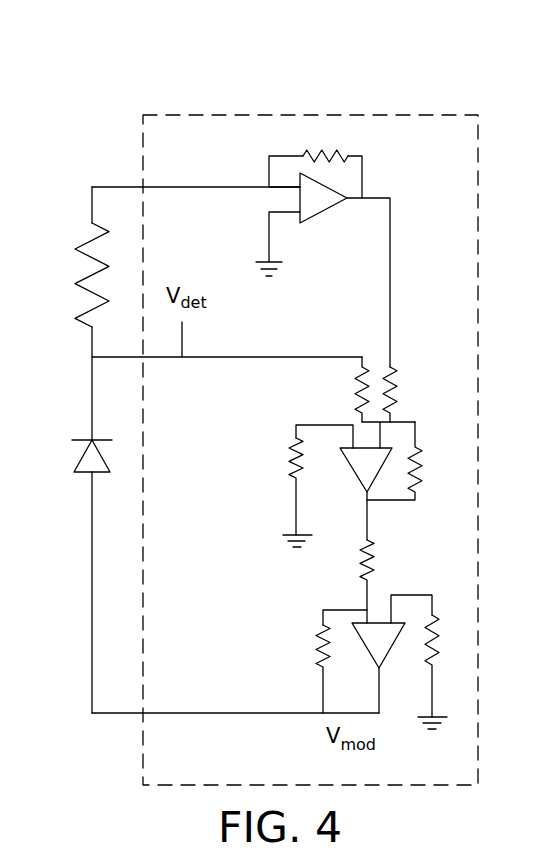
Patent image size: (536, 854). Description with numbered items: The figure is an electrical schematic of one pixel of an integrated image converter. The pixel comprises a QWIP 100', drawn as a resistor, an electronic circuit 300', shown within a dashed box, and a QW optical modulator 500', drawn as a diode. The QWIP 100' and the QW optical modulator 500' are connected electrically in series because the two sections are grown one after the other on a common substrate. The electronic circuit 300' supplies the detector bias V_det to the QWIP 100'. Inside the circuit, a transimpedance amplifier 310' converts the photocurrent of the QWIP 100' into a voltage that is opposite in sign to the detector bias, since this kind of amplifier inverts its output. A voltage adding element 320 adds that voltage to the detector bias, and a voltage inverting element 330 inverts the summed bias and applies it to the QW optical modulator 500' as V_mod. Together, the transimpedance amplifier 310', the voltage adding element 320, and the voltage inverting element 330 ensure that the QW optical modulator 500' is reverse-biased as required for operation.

The electronic circuit 300' is at (307, 424).
The QWIP 100' is at (74, 259).
The QW optical modulator 500' is at (72, 480).
The transimpedance amplifier 310' is at (323, 258).
The voltage adding element 320 is at (340, 463).
The voltage inverting element 330 is at (360, 605).